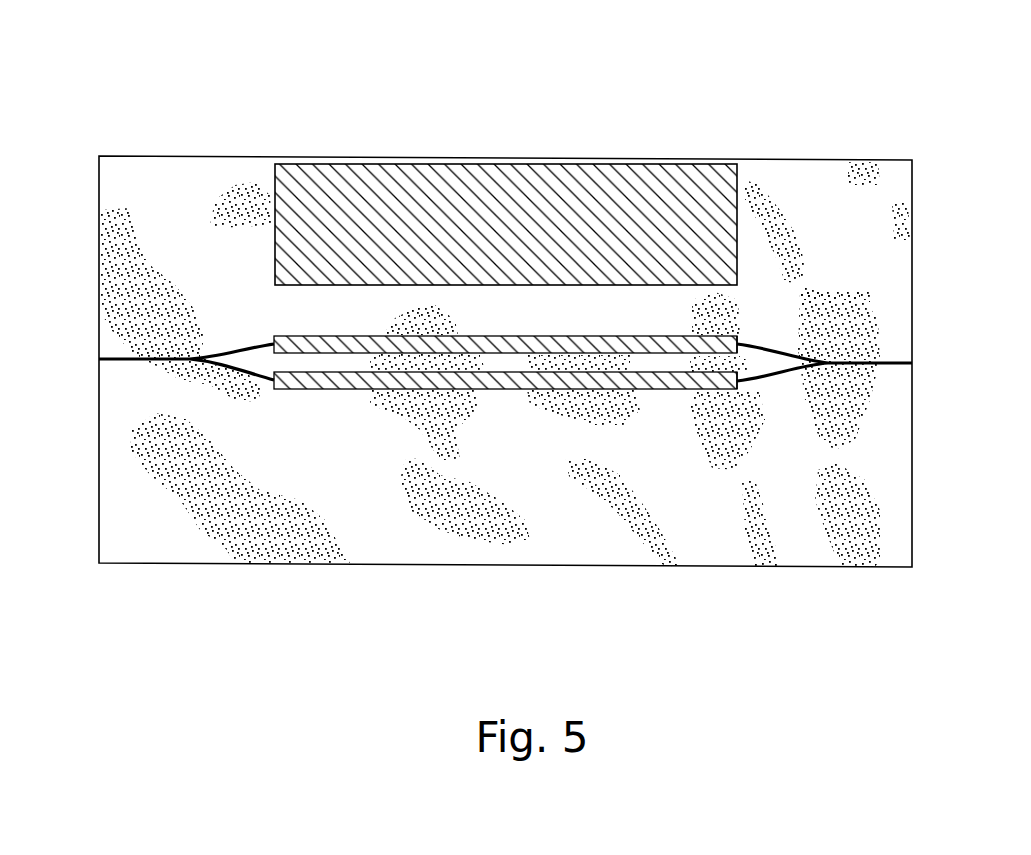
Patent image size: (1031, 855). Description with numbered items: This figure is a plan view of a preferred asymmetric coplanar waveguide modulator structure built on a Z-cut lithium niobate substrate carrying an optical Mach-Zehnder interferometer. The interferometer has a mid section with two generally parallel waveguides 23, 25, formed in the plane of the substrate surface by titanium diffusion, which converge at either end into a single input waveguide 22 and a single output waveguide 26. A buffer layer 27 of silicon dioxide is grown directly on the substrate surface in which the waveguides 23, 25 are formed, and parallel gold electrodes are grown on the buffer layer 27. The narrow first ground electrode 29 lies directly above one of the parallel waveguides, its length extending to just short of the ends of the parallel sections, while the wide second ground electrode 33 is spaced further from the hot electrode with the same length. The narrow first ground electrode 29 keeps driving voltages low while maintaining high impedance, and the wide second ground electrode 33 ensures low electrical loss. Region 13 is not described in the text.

The fiber coupler end / splice region 13 is at (722, 335).
The input waveguide 22 is at (150, 363).
The parallel waveguide 23 is at (746, 386).
The parallel waveguide 25 is at (266, 338).
The output waveguide 26 is at (868, 366).
The buffer layer 27 is at (236, 525).
The first ground electrode 29 is at (448, 390).
The second ground electrode 33 is at (690, 185).